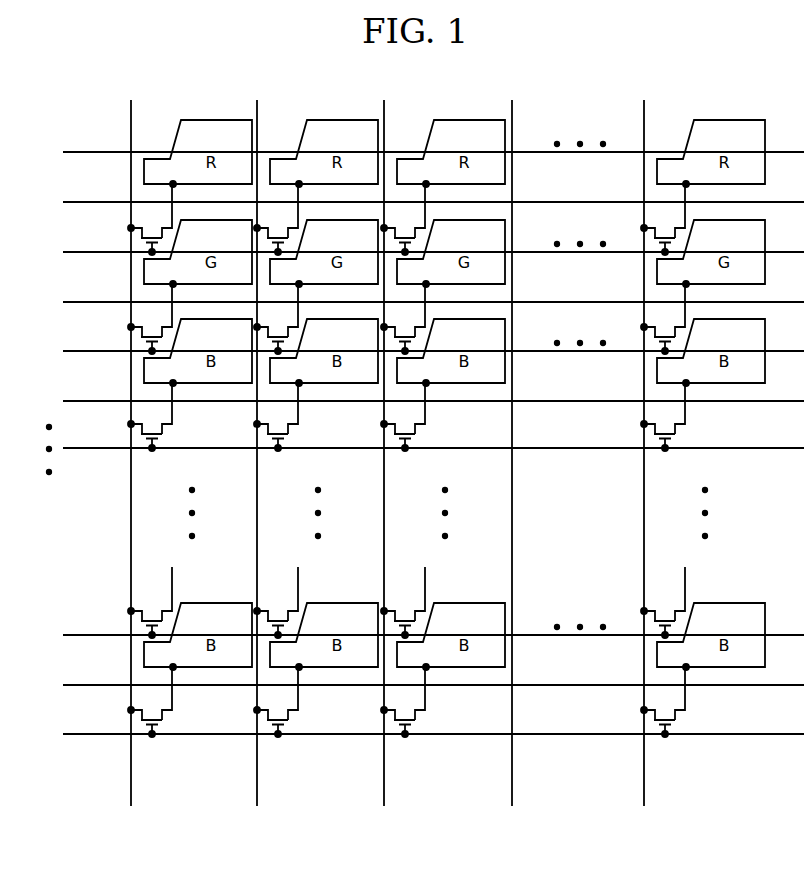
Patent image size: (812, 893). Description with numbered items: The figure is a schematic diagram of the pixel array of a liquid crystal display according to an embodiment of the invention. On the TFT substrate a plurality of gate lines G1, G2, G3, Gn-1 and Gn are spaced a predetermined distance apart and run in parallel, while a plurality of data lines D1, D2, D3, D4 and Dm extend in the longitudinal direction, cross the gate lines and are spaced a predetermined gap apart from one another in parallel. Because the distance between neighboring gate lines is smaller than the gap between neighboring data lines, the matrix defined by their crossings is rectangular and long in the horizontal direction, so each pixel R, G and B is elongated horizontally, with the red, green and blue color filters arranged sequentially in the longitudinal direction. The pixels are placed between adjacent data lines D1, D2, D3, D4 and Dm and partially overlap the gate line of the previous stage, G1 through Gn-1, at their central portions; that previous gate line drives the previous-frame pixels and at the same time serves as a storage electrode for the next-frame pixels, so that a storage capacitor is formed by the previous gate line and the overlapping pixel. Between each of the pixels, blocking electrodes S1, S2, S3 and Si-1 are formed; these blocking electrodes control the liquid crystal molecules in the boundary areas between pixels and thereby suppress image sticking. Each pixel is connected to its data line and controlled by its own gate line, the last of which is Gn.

The data line D1 is at (131, 444).
The data line D2 is at (257, 444).
The data line D3 is at (384, 444).
The data line D4 is at (512, 444).
The data line Dm is at (644, 444).
The gate line G1 is at (421, 152).
The blocking electrode S1 is at (422, 202).
The gate line G2 is at (421, 252).
The blocking electrode S2 is at (422, 302).
The gate line G3 is at (421, 351).
The blocking electrode S3 is at (422, 401).
The gate line Gn-1 is at (414, 635).
The blocking electrode Si-1 is at (417, 685).
The gate line Gn is at (421, 734).